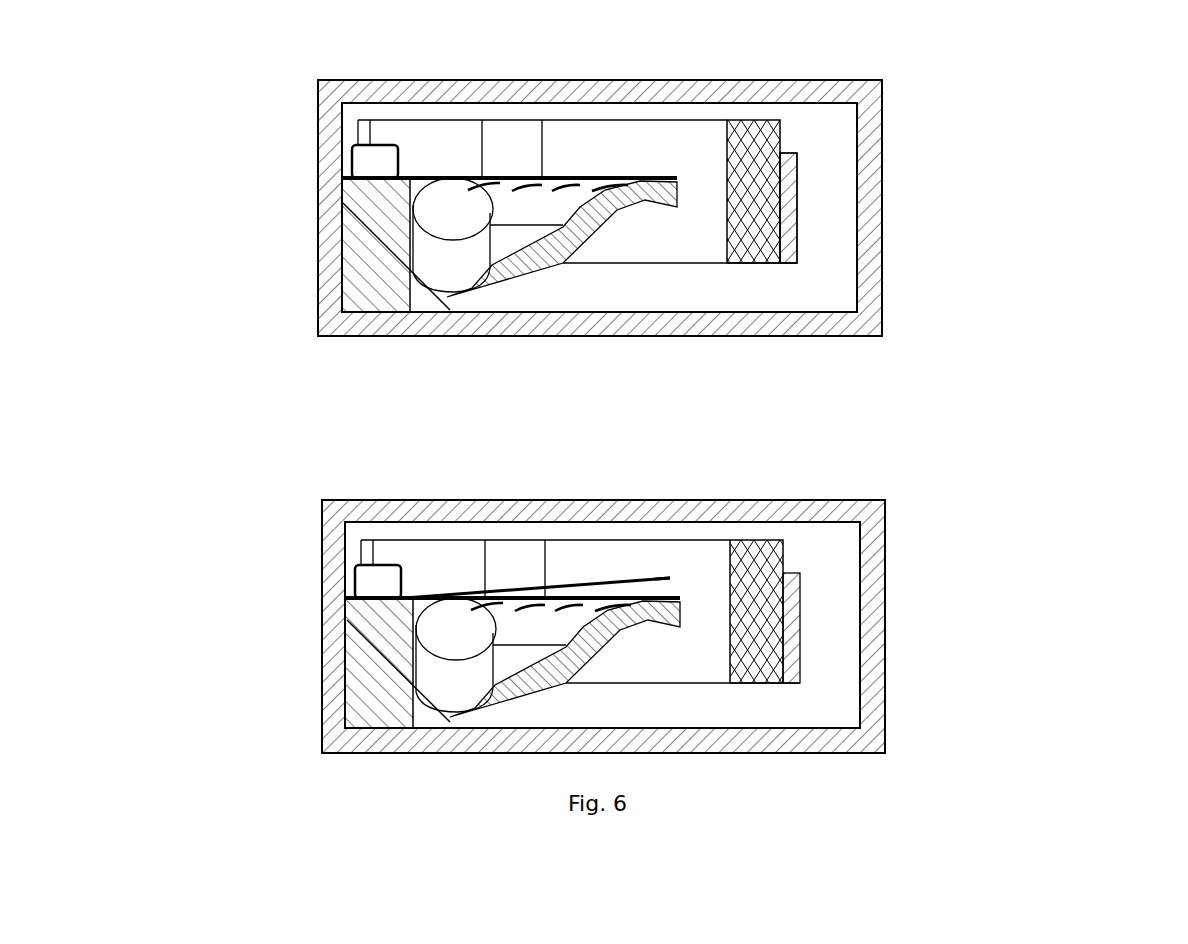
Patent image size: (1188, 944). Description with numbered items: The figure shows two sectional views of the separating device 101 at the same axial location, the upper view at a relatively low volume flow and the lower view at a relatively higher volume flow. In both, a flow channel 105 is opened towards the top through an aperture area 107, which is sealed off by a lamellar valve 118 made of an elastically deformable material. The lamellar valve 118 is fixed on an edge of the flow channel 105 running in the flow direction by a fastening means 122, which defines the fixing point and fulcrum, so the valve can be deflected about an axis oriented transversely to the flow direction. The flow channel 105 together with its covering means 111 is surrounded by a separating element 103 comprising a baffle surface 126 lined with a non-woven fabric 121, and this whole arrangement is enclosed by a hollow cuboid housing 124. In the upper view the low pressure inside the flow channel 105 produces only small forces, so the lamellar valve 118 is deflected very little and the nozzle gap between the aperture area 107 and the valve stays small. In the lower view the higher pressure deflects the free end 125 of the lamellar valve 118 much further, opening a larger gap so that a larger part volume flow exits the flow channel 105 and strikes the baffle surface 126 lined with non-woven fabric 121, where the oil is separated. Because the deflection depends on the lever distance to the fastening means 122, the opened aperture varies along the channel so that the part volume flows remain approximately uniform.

The separating device 101 is at (672, 360).
The separating element 103 is at (760, 142).
The flow channel 105 is at (480, 689).
The aperture area 107 is at (585, 595).
The covering means 111 is at (410, 180).
The lamellar valve 118 is at (530, 299).
The non-woven fabric 121 is at (947, 172).
The fastening means 122 is at (372, 575).
The hollow cuboid housing 124 is at (327, 285).
The free end 125 is at (670, 578).
The baffle surface 126 is at (795, 232).